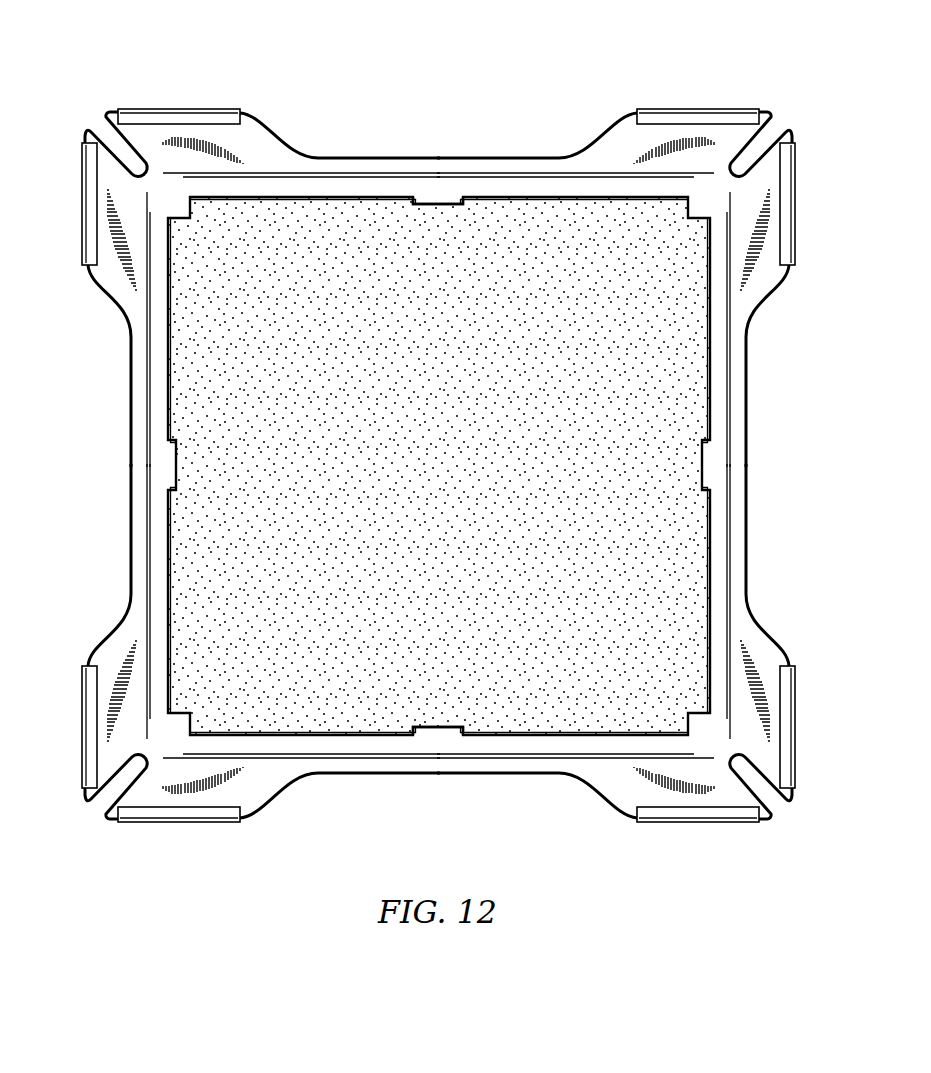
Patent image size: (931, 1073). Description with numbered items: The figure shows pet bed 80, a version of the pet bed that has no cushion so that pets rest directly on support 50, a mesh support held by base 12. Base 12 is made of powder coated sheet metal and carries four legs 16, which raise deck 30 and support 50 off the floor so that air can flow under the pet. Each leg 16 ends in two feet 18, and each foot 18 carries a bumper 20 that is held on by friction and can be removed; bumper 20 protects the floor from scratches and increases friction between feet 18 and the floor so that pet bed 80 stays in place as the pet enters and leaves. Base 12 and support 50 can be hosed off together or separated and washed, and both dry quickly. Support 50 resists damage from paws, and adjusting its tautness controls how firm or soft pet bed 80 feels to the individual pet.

The pet bed 80 is at (441, 446).
The legs 16 is at (482, 160).
The feet 18 is at (262, 140).
The bumper 20 is at (178, 110).
The support 50 is at (450, 475).
The deck 30 is at (437, 190).
The base 12 is at (400, 748).